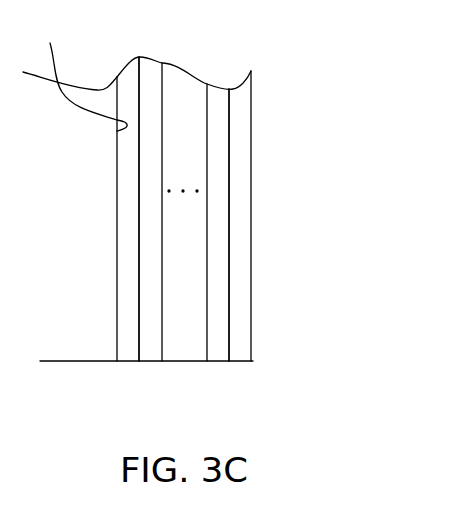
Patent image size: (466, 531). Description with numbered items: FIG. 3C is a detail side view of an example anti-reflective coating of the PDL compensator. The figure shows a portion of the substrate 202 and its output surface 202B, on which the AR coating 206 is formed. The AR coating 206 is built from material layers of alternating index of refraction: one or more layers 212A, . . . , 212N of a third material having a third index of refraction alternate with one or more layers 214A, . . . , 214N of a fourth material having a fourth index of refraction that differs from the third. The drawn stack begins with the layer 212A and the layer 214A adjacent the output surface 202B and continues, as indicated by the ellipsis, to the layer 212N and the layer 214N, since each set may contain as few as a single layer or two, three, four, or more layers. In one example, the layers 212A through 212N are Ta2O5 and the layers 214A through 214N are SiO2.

The substrate 202 is at (100, 200).
The output surface 202B is at (78, 74).
The AR coating 206 is at (252, 47).
The layer of third material 212A is at (128, 363).
The layer of fourth material 214A is at (154, 363).
The layer of third material 212N is at (218, 363).
The layer of fourth material 214N is at (240, 363).